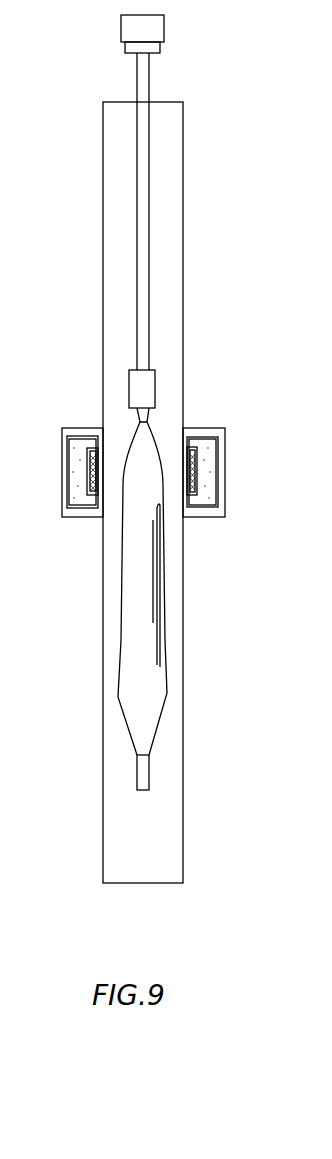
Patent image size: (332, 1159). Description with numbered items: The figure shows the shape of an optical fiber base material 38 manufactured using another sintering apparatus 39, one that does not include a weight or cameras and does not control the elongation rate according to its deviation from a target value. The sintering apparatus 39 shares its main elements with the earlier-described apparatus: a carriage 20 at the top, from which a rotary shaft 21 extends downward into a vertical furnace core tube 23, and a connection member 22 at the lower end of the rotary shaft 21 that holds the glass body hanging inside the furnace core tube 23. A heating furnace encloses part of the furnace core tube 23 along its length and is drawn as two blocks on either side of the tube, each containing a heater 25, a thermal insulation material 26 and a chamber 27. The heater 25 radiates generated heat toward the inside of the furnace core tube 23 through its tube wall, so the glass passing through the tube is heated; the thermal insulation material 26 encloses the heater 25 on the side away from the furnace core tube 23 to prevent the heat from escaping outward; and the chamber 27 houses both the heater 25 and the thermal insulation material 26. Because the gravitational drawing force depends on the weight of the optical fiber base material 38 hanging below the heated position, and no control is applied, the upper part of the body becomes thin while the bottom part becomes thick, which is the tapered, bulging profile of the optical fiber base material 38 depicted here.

The sintering apparatus 39 is at (68, 40).
The carriage 20 is at (164, 31).
The rotary shaft 21 is at (149, 77).
The connection member 22 is at (156, 391).
The furnace core tube 23 is at (103, 343).
The heater 25 is at (195, 485).
The thermal insulation material 26 is at (212, 460).
The chamber 27 is at (215, 428).
The optical fiber base material 38 is at (128, 593).